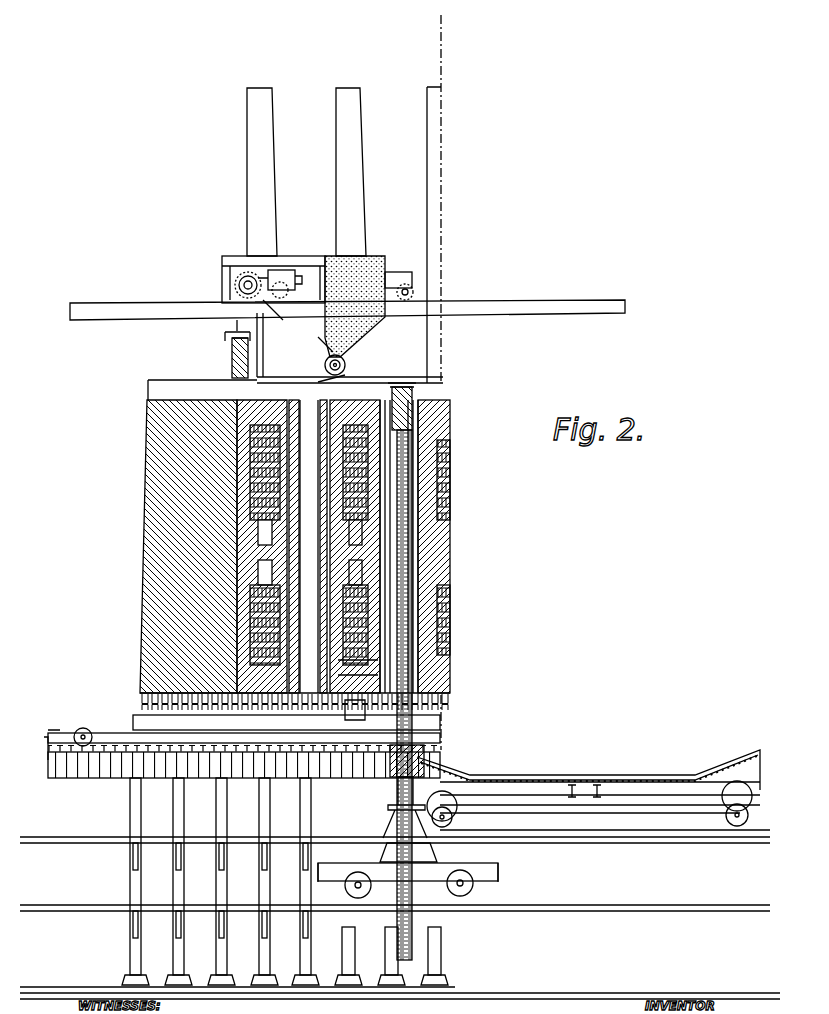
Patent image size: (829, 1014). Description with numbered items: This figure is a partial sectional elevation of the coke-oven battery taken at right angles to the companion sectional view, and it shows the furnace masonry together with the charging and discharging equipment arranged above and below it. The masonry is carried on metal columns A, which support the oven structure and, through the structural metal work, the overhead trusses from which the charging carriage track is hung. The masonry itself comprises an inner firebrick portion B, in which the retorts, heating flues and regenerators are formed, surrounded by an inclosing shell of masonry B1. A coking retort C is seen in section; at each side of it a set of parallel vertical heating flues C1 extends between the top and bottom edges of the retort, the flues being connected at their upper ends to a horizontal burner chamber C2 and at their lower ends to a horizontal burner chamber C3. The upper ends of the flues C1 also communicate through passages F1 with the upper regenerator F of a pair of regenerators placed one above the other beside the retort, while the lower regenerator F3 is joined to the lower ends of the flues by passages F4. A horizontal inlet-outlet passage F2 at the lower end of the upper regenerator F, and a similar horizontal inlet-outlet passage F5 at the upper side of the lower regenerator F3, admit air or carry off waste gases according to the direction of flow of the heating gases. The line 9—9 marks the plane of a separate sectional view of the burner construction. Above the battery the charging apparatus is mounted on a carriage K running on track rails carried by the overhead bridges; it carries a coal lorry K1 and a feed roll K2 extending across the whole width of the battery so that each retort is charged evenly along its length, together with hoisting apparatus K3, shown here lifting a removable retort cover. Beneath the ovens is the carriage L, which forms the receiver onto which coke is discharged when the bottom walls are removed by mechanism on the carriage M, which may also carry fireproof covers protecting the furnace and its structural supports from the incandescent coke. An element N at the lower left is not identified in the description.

The carriage K is at (287, 262).
The coal lorry K1 is at (366, 335).
The feed roll K2 is at (345, 362).
The hoisting apparatus K3 is at (287, 320).
The inner firebrick portion B is at (290, 400).
The inclosing shell of masonry B1 is at (256, 565).
The upper regenerator F is at (287, 460).
The passages F1 is at (300, 397).
The horizontal inlet-outlet passage F2 is at (255, 533).
The lower regenerator F3 is at (250, 628).
The passages F4 is at (295, 668).
The horizontal inlet-outlet passages F5 is at (245, 570).
The coking retort C is at (309, 546).
The vertical heating flues C1 is at (328, 463).
The horizontal burner chambers C2 is at (330, 427).
The horizontal burner chambers C3 is at (330, 645).
The section line 9— 9 is at (372, 650).
The conveyor N is at (115, 748).
The metal columns A is at (130, 888).
The carriage L is at (522, 787).
The carriage M is at (456, 871).